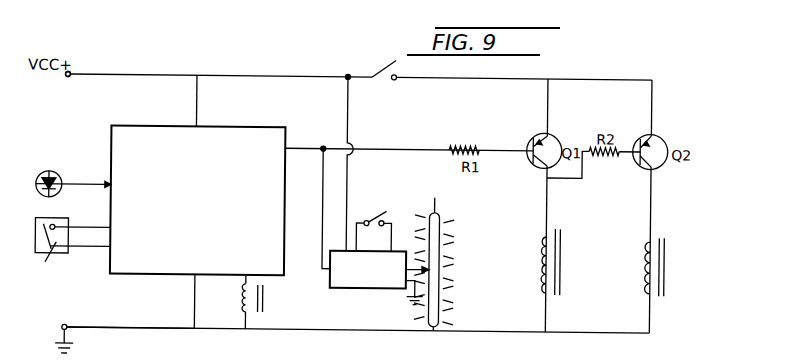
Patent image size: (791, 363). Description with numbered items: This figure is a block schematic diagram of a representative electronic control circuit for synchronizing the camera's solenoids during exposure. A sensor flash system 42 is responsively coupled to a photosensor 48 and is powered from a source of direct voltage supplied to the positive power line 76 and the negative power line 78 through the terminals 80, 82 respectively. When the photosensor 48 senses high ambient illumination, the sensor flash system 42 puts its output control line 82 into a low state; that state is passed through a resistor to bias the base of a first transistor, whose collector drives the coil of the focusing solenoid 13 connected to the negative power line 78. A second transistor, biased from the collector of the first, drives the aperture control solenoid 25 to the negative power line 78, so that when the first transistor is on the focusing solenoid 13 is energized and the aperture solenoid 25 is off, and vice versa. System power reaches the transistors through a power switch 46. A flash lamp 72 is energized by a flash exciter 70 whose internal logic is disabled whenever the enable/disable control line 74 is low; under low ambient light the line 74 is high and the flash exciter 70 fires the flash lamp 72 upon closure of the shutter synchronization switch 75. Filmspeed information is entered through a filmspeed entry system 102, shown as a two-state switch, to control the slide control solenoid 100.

The positive power line 76 is at (108, 74).
The terminal 80 is at (67, 77).
The sensor flash system 42 is at (219, 124).
The output control line 82 is at (77, 311).
The photosensor 48 is at (58, 173).
The filmspeed entry system 102 is at (50, 254).
The negative power line 78 is at (125, 327).
The slide control solenoid 100 is at (244, 297).
The enable/disable control line 74 is at (324, 172).
The power switch 46 is at (386, 64).
The focusing solenoid 13 is at (546, 251).
The aperture control solenoid 25 is at (650, 256).
The flash exciter 70 is at (352, 287).
The shutter synchronization switch 75 is at (384, 212).
The flash lamp 72 is at (442, 219).